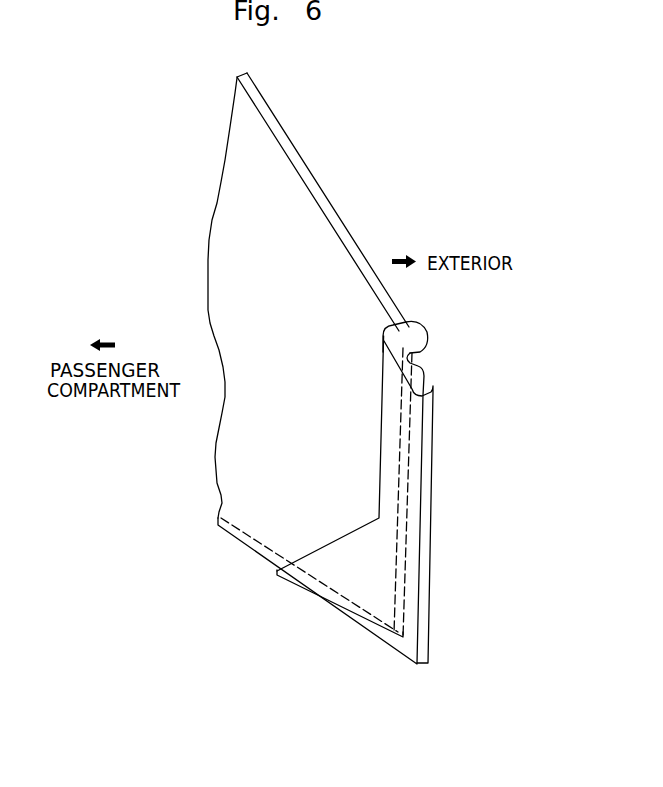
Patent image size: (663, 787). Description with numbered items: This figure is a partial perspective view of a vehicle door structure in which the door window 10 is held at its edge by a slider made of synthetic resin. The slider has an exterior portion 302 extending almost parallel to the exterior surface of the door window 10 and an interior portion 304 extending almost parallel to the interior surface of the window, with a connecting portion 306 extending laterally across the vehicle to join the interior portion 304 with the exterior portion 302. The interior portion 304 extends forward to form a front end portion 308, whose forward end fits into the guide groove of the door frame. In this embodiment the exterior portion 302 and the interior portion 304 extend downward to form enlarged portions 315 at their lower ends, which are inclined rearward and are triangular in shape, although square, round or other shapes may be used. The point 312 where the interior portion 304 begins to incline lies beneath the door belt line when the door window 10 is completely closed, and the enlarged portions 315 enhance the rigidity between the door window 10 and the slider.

The door window 10 is at (325, 238).
The exterior portion 302 is at (413, 340).
The interior portion 304 is at (386, 342).
The connecting portion 306 is at (415, 360).
The front end portion 308 is at (425, 385).
The point where the interior portion begins to be inclined 312 is at (380, 517).
The enlarged portions 315 is at (338, 557).